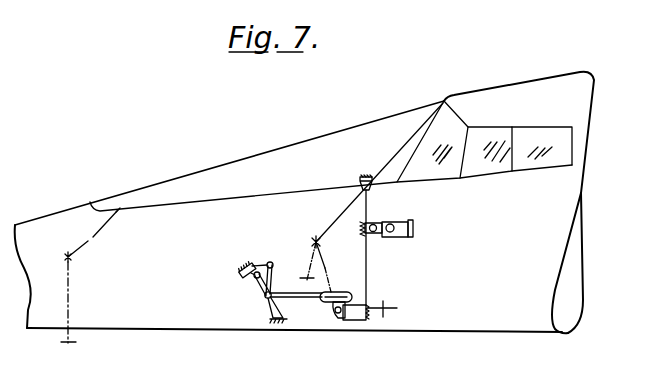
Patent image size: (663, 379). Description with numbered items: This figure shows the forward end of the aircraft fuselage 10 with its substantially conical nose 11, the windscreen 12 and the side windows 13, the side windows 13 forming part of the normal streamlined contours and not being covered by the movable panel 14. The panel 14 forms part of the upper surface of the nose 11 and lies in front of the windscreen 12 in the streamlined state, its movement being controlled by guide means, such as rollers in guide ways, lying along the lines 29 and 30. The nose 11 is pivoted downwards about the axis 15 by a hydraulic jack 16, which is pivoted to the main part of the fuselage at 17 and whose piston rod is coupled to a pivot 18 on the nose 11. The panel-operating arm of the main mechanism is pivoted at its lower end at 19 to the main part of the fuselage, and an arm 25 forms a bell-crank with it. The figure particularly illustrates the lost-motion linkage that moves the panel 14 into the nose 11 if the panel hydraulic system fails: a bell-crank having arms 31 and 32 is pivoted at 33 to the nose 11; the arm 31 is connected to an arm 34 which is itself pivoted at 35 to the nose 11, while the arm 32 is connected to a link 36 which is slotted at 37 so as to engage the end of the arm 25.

The fuselage 10 is at (460, 113).
The nose 11 is at (36, 230).
The windscreen 12 is at (430, 143).
The side windows 13 is at (490, 135).
The movable panel 14 is at (337, 140).
The axis 15 is at (392, 305).
The hydraulic jack 16 is at (413, 226).
The pivot 17 is at (392, 223).
The pivot 18 is at (375, 223).
The pivot 19 is at (345, 320).
The arm 25 is at (350, 305).
The guide line 29 is at (85, 238).
The guide line 30 is at (342, 219).
The bell-crank arm 31 is at (269, 263).
The bell-crank arm 32 is at (259, 302).
The pivot 33 is at (253, 277).
The arm 34 is at (272, 288).
The pivot 35 is at (278, 325).
The link 36 is at (314, 300).
The slot 37 is at (331, 293).